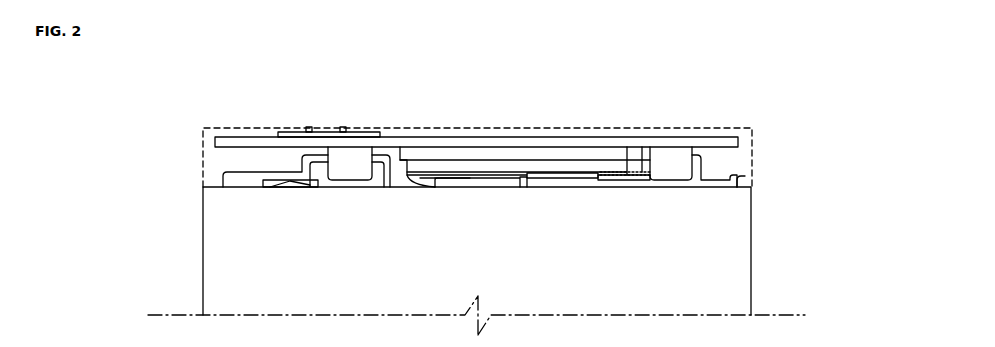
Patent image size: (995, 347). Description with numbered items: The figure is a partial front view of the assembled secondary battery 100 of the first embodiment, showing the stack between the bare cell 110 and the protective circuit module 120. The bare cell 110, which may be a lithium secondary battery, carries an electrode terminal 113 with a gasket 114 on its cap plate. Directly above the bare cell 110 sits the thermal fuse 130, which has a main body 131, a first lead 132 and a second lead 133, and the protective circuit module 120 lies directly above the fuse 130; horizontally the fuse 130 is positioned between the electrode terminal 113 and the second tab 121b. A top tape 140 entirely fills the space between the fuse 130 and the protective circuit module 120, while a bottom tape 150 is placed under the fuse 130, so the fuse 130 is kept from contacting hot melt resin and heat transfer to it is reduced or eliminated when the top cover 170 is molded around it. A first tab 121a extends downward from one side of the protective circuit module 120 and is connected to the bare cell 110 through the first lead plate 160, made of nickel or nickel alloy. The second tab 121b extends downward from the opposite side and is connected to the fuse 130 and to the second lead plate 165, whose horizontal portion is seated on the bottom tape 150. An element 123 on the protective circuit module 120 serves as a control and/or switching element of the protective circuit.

The secondary battery 100 is at (142, 80).
The bare cell 110 is at (752, 247).
The electrode terminal 113 is at (470, 177).
The gasket 114 is at (428, 180).
The protective circuit module 120 is at (215, 142).
The first tab 121a is at (354, 157).
The second tab 121b is at (672, 157).
The element 123 is at (528, 152).
The fuse 130 is at (542, 213).
The main body 131 is at (563, 178).
The first lead 132 is at (520, 190).
The second lead 133 is at (621, 198).
The top tape 140 is at (577, 167).
The bottom tape 150 is at (745, 178).
The first lead plate 160 is at (226, 180).
The second lead plate 165 is at (613, 180).
The top cover 170 is at (218, 127).